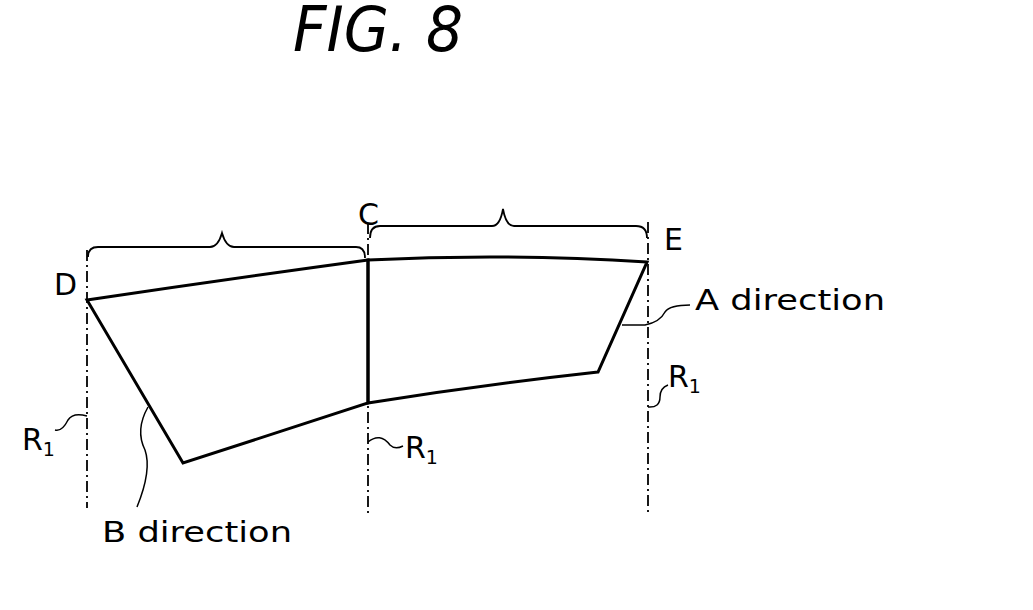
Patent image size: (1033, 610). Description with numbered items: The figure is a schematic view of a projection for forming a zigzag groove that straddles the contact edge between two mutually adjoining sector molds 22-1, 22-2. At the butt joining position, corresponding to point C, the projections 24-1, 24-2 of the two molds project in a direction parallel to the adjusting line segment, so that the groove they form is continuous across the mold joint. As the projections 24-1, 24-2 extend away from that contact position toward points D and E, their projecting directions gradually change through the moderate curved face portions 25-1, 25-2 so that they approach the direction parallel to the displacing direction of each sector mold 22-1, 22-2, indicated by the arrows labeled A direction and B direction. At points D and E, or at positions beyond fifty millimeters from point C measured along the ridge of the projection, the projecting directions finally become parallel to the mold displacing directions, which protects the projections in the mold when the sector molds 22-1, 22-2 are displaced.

The sector mold 22-2 is at (263, 162).
The sector mold 22-1 is at (543, 140).
The moderate curved face portion 25-2 is at (226, 225).
The moderate curved face portion 25-1 is at (508, 204).
The projection 24-2 is at (273, 399).
The projection 24-1 is at (493, 362).